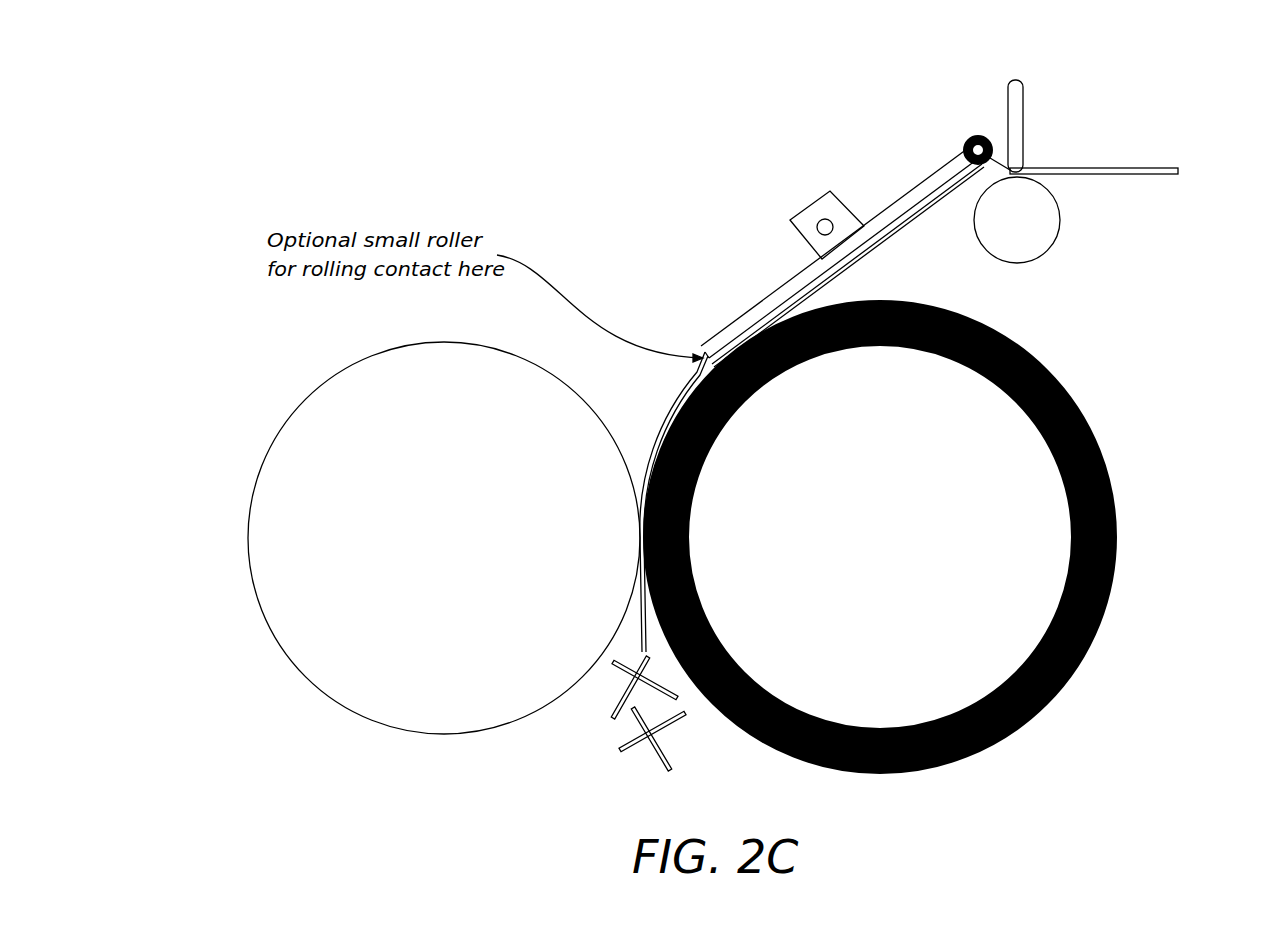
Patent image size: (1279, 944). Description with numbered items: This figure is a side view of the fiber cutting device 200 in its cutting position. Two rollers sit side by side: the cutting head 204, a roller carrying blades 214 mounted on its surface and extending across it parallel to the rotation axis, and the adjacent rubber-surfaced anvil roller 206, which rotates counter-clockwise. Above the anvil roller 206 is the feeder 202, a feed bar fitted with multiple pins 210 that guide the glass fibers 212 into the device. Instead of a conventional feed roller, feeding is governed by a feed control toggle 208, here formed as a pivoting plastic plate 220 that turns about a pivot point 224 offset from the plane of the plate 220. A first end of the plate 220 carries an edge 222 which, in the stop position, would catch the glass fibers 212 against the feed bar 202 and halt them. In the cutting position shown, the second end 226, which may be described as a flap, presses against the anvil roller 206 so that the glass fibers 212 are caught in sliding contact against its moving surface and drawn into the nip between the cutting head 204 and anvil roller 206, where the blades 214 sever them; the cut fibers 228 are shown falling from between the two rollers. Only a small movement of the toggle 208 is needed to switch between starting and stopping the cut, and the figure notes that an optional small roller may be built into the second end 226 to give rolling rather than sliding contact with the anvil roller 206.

The fiber cutting device 200 is at (1178, 112).
The feeder 202 is at (1033, 242).
The cutting head 204 is at (522, 678).
The anvil roller 206 is at (1002, 738).
The feed control toggle 208 is at (828, 185).
The pins 210 is at (1013, 127).
The glass fibers 212 is at (1118, 167).
The blades 214 is at (380, 725).
The plate 220 is at (893, 220).
The edge 222 is at (966, 140).
The pivot point 224 is at (820, 222).
The second end 226 is at (707, 347).
The cut fibers 228 is at (682, 748).